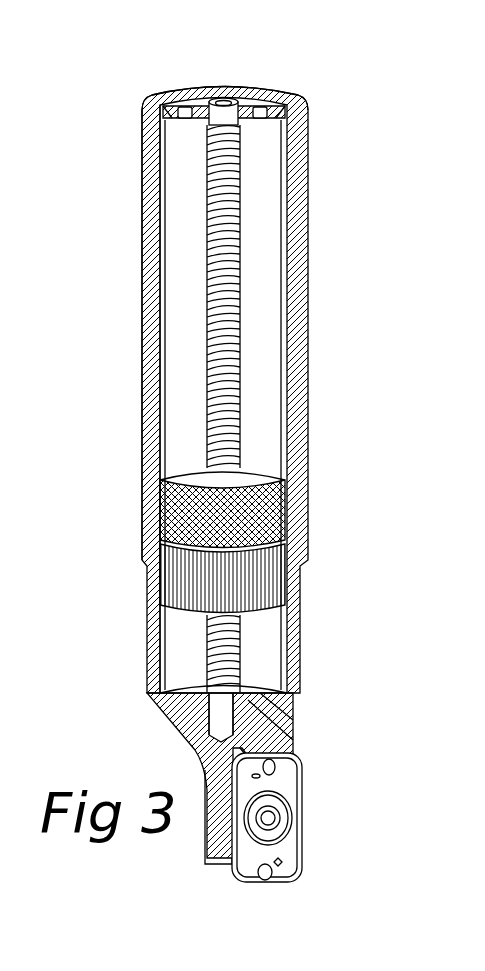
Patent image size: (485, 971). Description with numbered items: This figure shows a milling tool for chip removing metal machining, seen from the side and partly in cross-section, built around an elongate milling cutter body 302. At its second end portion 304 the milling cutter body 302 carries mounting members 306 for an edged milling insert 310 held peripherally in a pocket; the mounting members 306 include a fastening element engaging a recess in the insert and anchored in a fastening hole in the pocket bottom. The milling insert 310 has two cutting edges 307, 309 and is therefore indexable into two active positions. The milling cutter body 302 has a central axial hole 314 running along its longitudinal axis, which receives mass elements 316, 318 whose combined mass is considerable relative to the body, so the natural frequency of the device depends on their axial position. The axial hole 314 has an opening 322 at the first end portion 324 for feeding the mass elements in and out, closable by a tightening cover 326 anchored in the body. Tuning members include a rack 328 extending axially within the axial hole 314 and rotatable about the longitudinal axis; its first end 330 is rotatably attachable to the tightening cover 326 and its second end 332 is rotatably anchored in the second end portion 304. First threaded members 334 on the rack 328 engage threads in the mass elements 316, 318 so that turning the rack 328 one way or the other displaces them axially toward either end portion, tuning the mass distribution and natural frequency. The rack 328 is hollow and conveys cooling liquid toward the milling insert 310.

The milling cutter body 302 is at (125, 252).
The second end portion 304 is at (193, 714).
The mounting members 306 is at (268, 817).
The cutting edge 307 is at (240, 748).
The cutting edge 309 is at (300, 880).
The milling insert 310 is at (293, 827).
The central axial hole 314 is at (258, 218).
The mass element 316 is at (180, 578).
The mass element 318 is at (185, 503).
The opening 322 is at (157, 66).
The first end portion 324 is at (150, 133).
The tightening cover 326 is at (210, 106).
The rack 328 is at (190, 163).
The first end of the rack 330 is at (240, 128).
The second end of the rack 332 is at (228, 690).
The first threaded members 334 is at (228, 271).